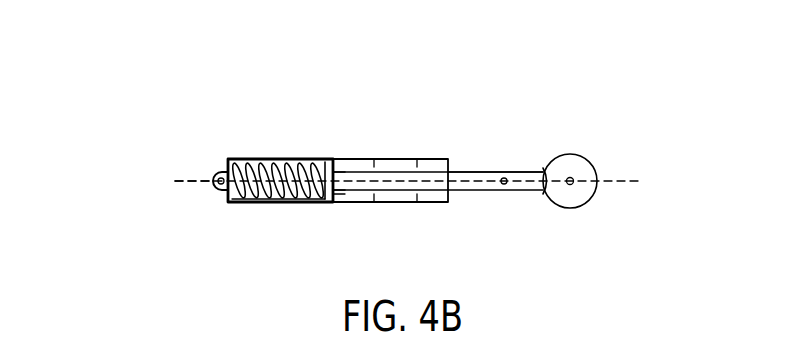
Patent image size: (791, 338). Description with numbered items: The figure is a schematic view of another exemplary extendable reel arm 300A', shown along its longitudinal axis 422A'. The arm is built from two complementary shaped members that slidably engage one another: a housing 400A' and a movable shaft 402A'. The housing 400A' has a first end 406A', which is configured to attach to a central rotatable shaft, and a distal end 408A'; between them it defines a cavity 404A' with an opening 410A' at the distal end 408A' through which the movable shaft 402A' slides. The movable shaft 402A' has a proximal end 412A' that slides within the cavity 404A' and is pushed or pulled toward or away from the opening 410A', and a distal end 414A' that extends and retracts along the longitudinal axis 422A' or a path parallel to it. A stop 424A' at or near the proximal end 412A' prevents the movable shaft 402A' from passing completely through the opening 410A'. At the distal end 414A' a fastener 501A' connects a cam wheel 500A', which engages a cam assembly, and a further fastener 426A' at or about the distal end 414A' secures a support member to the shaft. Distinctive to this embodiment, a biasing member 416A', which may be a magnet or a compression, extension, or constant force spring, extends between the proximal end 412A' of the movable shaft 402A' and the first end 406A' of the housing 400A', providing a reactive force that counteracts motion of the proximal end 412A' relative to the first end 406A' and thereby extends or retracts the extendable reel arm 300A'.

The extendable reel arm 300A' is at (373, 117).
The longitudinal axis 422A' is at (137, 148).
The first end 406A' is at (148, 212).
The biasing member 416A' is at (280, 147).
The housing 400A' is at (290, 146).
The distal end 408A' is at (262, 226).
The proximal end 412A' is at (375, 139).
The stop 424A' is at (364, 236).
The cavity 404A' is at (403, 222).
The opening 410A' is at (438, 131).
The movable shaft 402A' is at (504, 139).
The fastener 426A' is at (492, 218).
The distal end 414A' is at (583, 145).
The cam wheel 500A' is at (620, 163).
The fastener 501A' is at (637, 205).